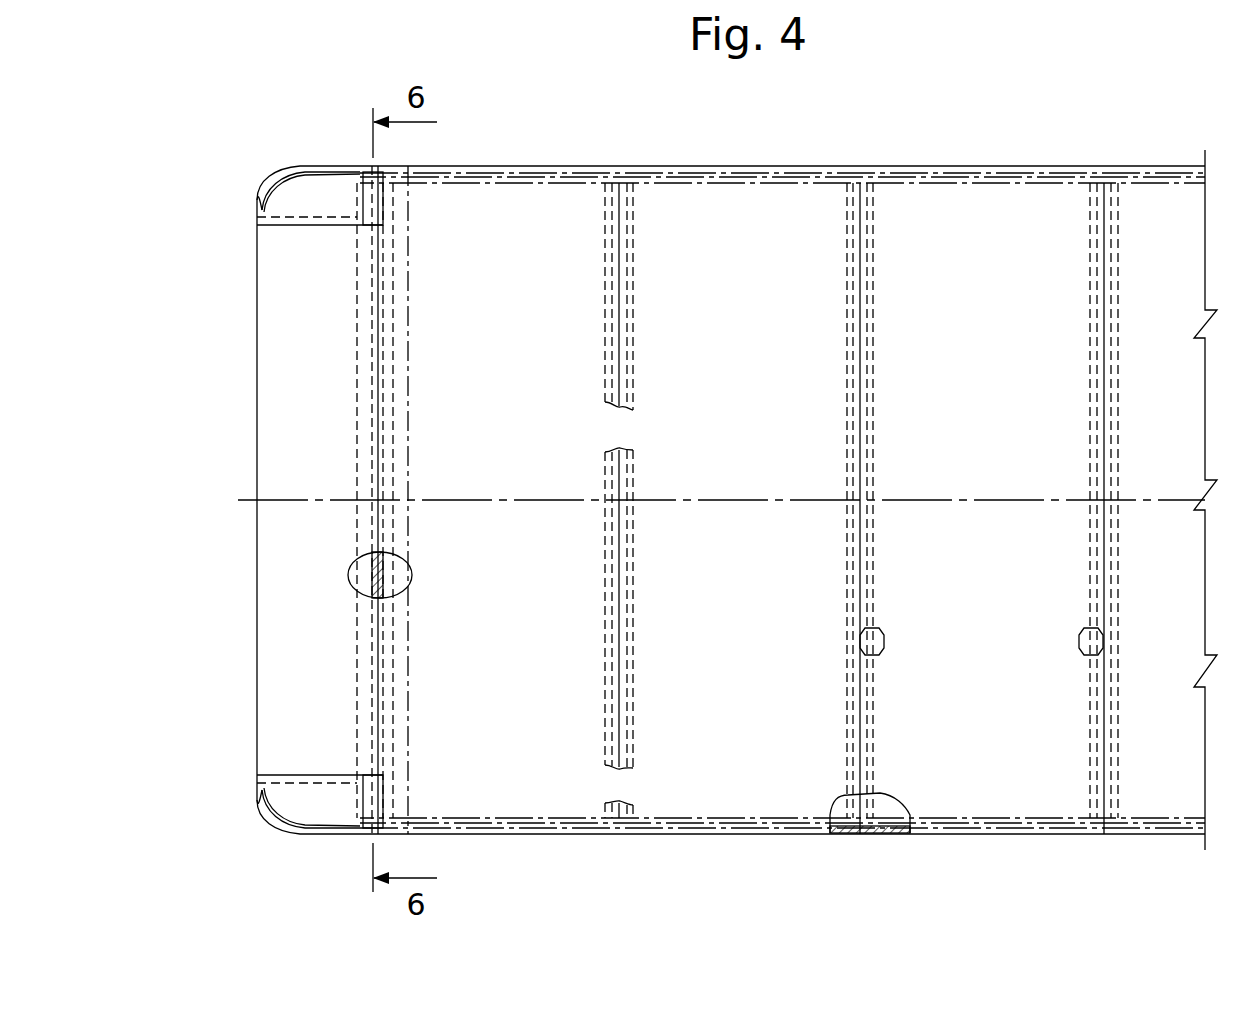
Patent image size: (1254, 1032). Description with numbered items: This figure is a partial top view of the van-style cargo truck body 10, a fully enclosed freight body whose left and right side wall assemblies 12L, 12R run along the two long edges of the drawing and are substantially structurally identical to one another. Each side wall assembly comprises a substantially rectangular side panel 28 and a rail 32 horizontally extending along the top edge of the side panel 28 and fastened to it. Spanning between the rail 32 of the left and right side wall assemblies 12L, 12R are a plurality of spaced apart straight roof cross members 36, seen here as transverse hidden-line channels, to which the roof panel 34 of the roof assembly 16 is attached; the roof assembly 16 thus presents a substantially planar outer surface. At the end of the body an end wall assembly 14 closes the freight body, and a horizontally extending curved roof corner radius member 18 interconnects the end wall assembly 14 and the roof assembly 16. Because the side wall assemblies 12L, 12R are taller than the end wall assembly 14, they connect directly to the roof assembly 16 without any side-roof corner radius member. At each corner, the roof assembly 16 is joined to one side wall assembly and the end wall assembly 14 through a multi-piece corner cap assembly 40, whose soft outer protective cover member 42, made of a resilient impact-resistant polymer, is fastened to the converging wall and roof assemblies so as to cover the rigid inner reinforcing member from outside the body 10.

The van-style cargo truck body 10 is at (943, 142).
The right side wall assembly 12R is at (596, 163).
The left side wall assembly 12L is at (596, 838).
The end wall assembly 14 is at (275, 500).
The roof assembly 16 is at (1007, 215).
The roof corner radius member 18 is at (272, 358).
The side panel 28 is at (732, 836).
The rail 32 is at (660, 830).
The roof panel 34 is at (726, 200).
The straight roof cross member 36 is at (402, 273).
The multi-piece corner cap assembly 40 is at (255, 186).
The protective cover member 42 is at (303, 163).